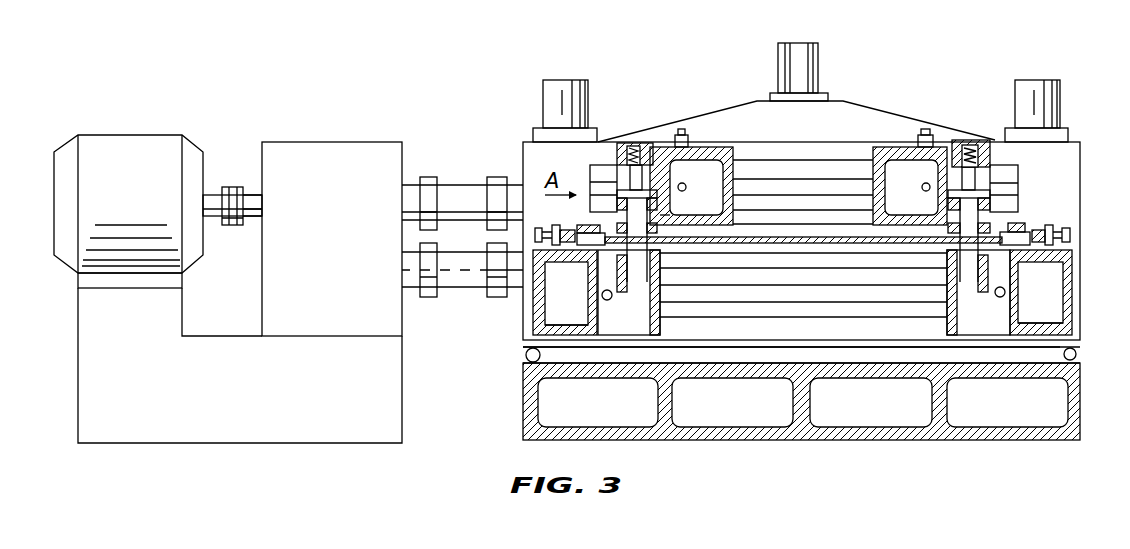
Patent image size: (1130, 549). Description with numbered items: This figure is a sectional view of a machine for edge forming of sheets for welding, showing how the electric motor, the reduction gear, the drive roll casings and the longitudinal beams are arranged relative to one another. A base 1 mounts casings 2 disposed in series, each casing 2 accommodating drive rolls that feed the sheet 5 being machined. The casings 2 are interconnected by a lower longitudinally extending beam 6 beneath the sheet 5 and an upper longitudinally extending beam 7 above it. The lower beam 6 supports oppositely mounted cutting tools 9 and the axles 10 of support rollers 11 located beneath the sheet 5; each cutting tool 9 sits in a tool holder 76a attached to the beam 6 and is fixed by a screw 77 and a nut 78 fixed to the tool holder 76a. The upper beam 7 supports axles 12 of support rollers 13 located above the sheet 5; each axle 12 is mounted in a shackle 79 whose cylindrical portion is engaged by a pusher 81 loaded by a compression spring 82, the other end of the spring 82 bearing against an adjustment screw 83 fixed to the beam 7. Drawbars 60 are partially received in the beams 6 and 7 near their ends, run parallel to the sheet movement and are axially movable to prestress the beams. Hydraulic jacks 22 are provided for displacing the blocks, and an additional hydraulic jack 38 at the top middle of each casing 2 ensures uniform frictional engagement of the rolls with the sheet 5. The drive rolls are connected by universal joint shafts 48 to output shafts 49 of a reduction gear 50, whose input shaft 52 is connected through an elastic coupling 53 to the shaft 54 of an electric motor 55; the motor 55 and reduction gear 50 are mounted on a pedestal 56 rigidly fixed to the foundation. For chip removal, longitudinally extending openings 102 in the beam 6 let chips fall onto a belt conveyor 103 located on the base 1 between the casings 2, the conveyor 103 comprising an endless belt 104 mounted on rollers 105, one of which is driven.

The base 1 is at (792, 432).
The casing 2 is at (843, 105).
The sheet 5 is at (790, 238).
The lower longitudinally extending beam 6 is at (533, 325).
The upper longitudinally extending beam 7 is at (733, 153).
The cutting tool 9 is at (1005, 280).
The axle 10 is at (652, 264).
The support roller 11 is at (636, 242).
The axle 12 is at (662, 215).
The support roller 13 is at (966, 208).
The hydraulic jack 22 is at (548, 95).
The additional hydraulic jack 38 is at (814, 56).
The universal joint shaft 48 is at (468, 190).
The output shaft 49 is at (418, 185).
The reduction gear 50 is at (319, 150).
The input shaft 52 is at (256, 200).
The elastic coupling 53 is at (236, 226).
The shaft 54 is at (214, 198).
The electric motor 55 is at (128, 150).
The pedestal 56 is at (226, 432).
The drawbar 60 is at (712, 158).
The tool holder 76a is at (567, 260).
The screw 77 is at (1068, 232).
The nut 78 is at (1046, 232).
The shackle 79 is at (686, 186).
The pusher 81 is at (634, 176).
The compression spring 82 is at (645, 143).
The adjustment screw 83 is at (624, 143).
The longitudinally extending opening 102 is at (590, 282).
The belt conveyor 103 is at (745, 343).
The endless belt 104 is at (828, 347).
The roller 105 is at (1077, 352).